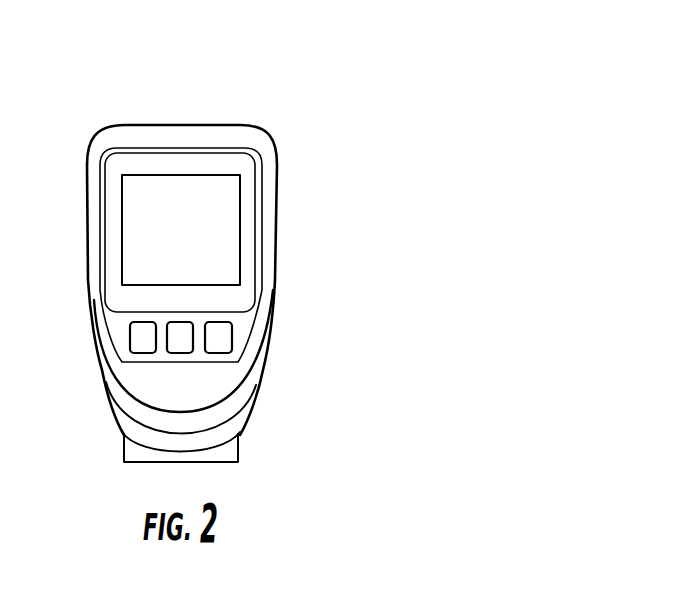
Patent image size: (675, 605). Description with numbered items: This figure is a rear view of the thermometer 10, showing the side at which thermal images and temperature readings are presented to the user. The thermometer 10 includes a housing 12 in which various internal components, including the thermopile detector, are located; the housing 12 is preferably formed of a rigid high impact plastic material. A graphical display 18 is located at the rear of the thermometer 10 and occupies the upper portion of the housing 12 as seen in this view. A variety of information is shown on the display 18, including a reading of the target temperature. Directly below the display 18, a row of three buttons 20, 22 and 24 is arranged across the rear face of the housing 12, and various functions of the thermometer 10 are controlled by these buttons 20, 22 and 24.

The thermometer 10 is at (348, 85).
The housing 12 is at (262, 394).
The graphical display 18 is at (222, 228).
The button 20 is at (135, 338).
The button 22 is at (183, 337).
The button 24 is at (220, 338).